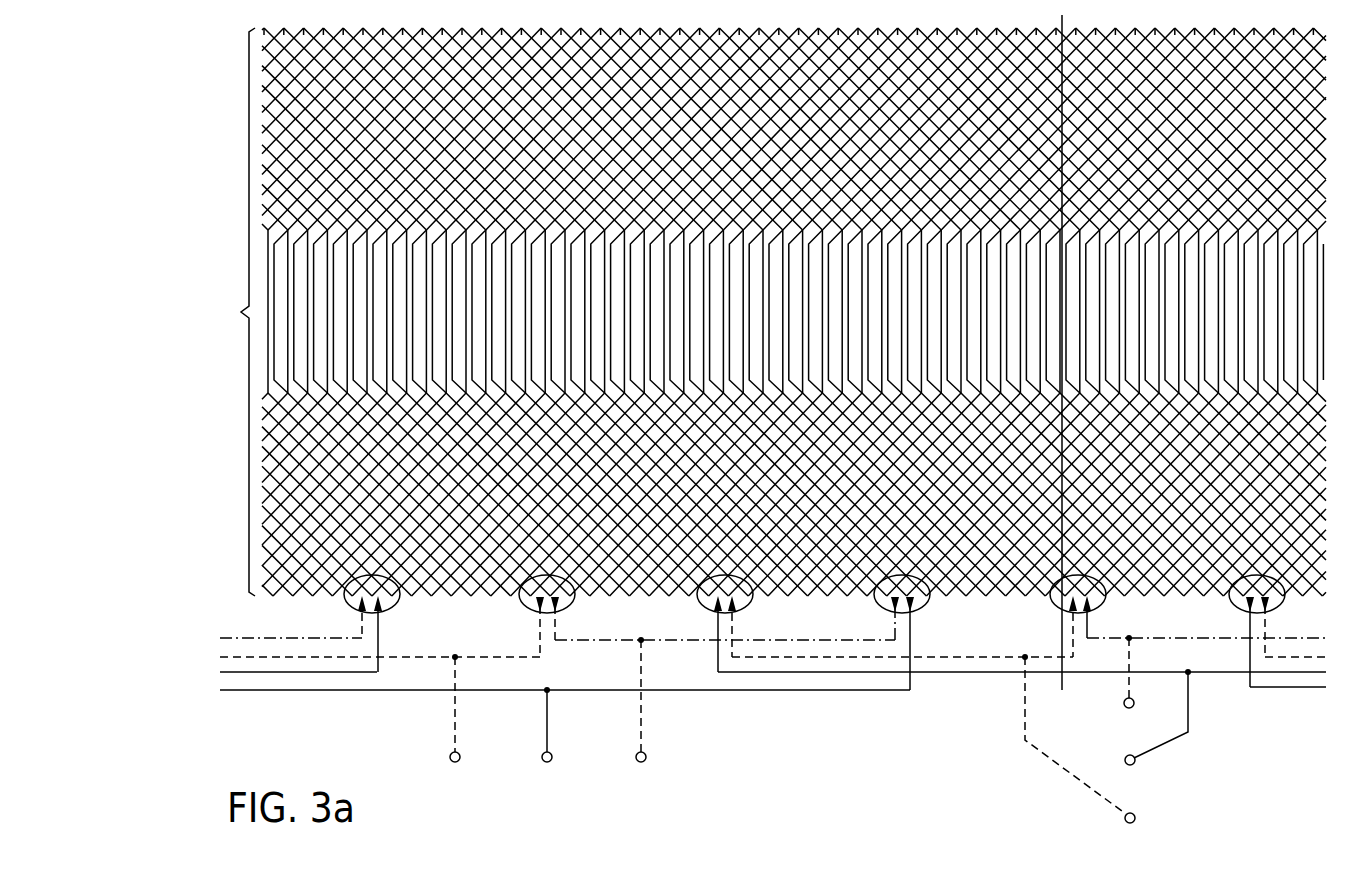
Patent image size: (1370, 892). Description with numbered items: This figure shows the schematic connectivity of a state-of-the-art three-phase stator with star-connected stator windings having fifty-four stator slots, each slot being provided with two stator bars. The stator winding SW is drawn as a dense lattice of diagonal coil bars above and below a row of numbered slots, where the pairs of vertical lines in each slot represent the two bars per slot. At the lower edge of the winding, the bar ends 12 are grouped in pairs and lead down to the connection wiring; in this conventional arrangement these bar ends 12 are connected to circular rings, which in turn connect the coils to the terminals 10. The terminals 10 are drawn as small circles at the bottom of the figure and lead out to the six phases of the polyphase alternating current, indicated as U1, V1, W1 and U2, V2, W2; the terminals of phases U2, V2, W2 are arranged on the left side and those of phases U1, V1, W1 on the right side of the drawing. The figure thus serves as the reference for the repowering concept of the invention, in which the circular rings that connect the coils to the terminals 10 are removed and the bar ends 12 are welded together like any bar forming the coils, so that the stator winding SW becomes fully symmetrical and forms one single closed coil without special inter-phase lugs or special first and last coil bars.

The terminals 10 is at (796, 734).
The bar ends 12 is at (352, 610).
The stator winding SW is at (766, 312).
The phase U1 is at (1080, 744).
The phase V1 is at (1141, 722).
The phase W1 is at (1112, 677).
The phase U2 is at (454, 723).
The phase V2 is at (547, 740).
The phase W2 is at (641, 715).